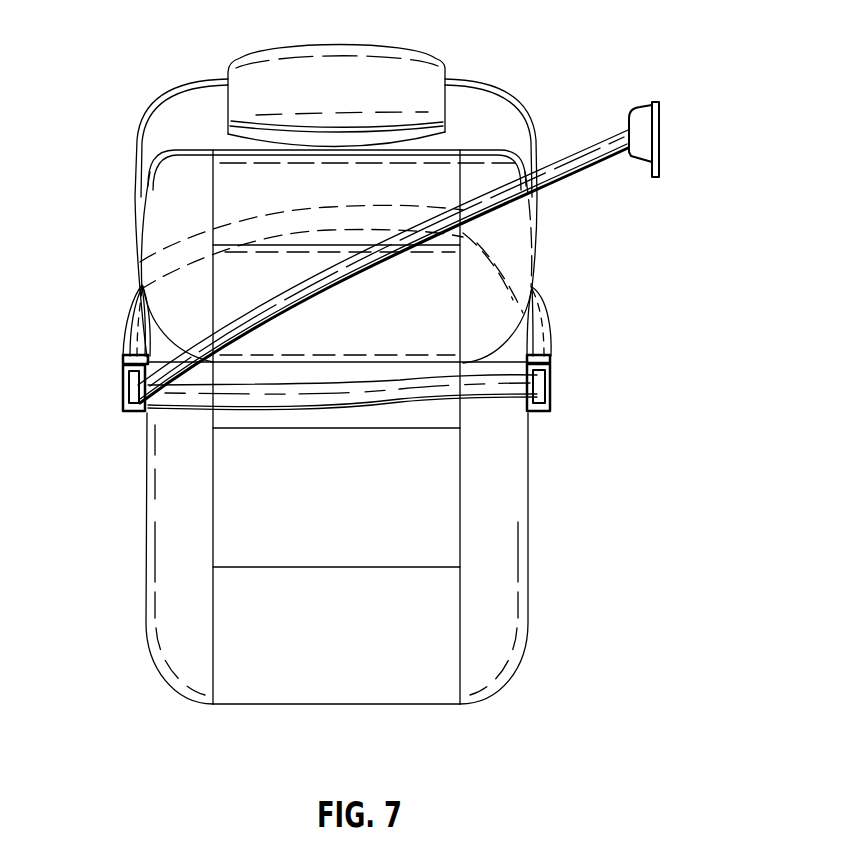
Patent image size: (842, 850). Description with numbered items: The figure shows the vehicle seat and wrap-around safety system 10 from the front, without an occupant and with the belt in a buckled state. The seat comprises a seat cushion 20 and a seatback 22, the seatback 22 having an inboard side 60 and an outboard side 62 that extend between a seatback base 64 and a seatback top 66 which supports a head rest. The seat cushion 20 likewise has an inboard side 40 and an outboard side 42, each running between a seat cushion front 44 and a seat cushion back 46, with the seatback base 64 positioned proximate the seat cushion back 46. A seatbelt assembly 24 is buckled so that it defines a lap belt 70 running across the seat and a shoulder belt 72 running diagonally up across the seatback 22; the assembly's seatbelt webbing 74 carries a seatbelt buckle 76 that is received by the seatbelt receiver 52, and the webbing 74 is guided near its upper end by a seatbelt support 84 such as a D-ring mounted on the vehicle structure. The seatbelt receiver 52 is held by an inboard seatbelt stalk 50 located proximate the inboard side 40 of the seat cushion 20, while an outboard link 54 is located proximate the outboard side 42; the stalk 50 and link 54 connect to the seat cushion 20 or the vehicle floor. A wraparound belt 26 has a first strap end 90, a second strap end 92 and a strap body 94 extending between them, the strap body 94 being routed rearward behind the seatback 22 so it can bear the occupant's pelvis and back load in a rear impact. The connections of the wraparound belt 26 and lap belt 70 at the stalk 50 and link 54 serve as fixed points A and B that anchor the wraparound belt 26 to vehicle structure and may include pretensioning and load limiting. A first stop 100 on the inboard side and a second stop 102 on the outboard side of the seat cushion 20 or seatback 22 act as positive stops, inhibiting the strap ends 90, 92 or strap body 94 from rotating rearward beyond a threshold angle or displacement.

The vehicle seat and wrap-around safety system 10 is at (569, 27).
The seat cushion 20 is at (238, 722).
The seatback 22 is at (481, 80).
The seatbelt assembly 24 is at (594, 172).
The wraparound belt 26 is at (129, 290).
The inboard side 40 is at (144, 595).
The outboard side 42 is at (533, 535).
The seat cushion front 44 is at (342, 706).
The seat cushion back 46 is at (323, 366).
The inboard seatbelt stalk 50 is at (140, 416).
The seatbelt receiver 52 is at (125, 413).
The outboard link 54 is at (538, 415).
The inboard side 60 is at (131, 225).
The outboard side 62 is at (545, 225).
The seatback base 64 is at (367, 358).
The seatback top 66 is at (192, 105).
The lap belt 70 is at (414, 407).
The shoulder belt 72 is at (566, 149).
The seatbelt webbing 74 is at (320, 273).
The seatbelt buckle 76 is at (121, 392).
The seatbelt support 84 is at (642, 118).
The first strap end 90 is at (127, 326).
The second strap end 92 is at (536, 318).
The strap body 94 is at (345, 206).
The first stop 100 is at (119, 368).
The second stop 102 is at (549, 349).
The fixed point A is at (120, 358).
The fixed point B is at (550, 384).